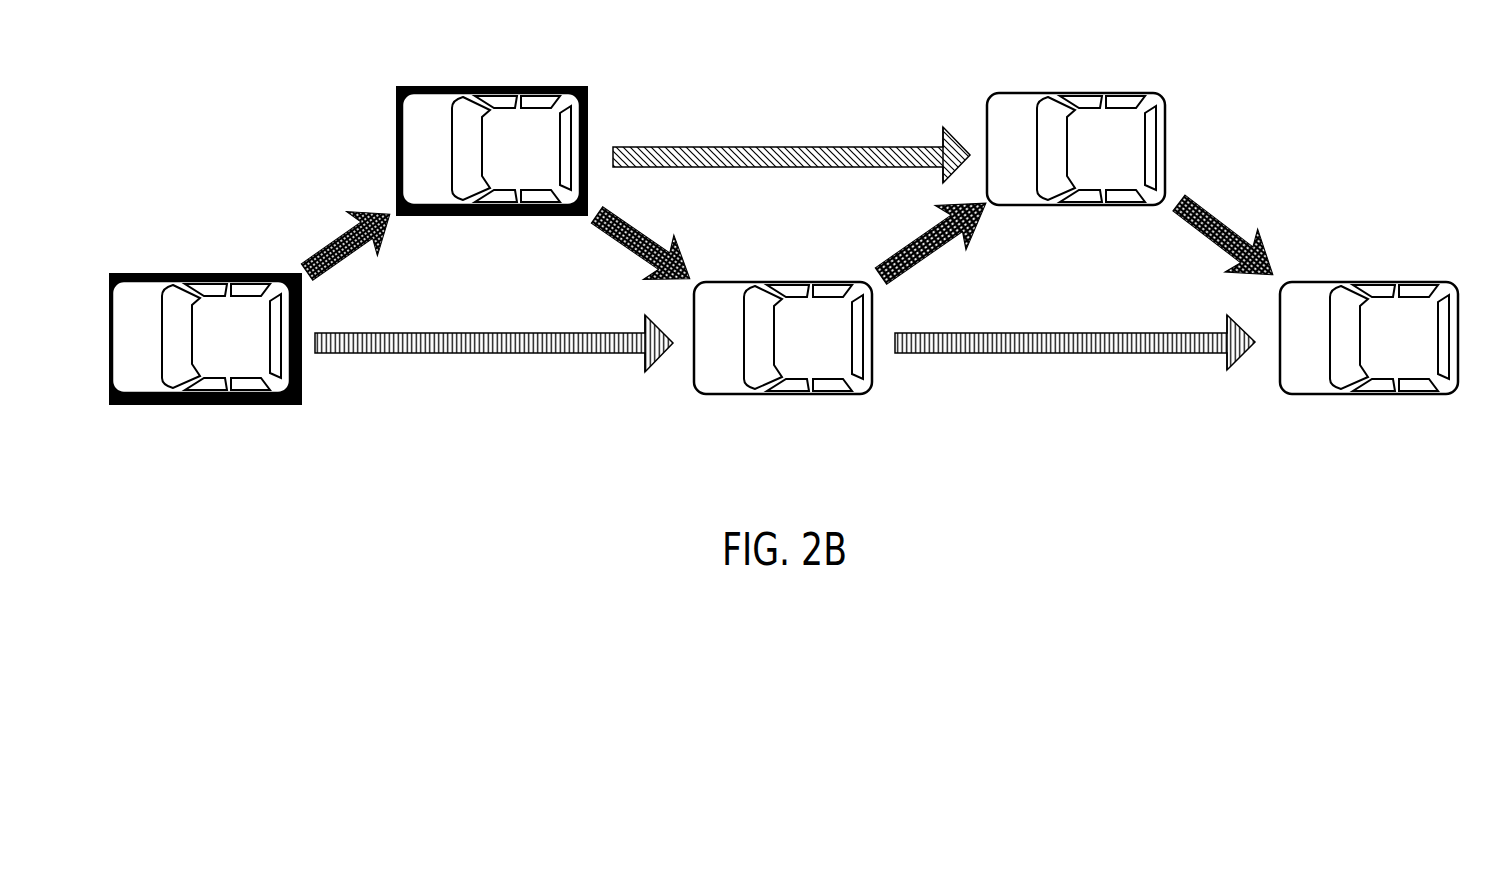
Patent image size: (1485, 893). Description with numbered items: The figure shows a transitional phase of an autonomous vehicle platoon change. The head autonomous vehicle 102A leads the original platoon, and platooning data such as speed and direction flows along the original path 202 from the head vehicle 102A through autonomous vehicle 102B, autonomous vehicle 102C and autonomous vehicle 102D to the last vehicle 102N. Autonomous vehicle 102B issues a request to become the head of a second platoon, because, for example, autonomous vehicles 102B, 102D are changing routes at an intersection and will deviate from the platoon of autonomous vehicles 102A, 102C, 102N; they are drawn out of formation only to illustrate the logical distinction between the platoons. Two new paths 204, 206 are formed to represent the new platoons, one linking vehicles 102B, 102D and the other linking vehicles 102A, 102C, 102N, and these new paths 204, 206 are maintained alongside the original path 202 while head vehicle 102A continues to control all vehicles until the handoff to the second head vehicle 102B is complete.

The head autonomous vehicle 102A is at (190, 273).
The autonomous vehicle 102B is at (475, 86).
The autonomous vehicle 102C is at (732, 282).
The autonomous vehicle 102D is at (1033, 93).
The last autonomous vehicle 102N is at (1333, 282).
The original path 202 is at (335, 236).
The new path 204 is at (801, 120).
The new path 206 is at (528, 306).